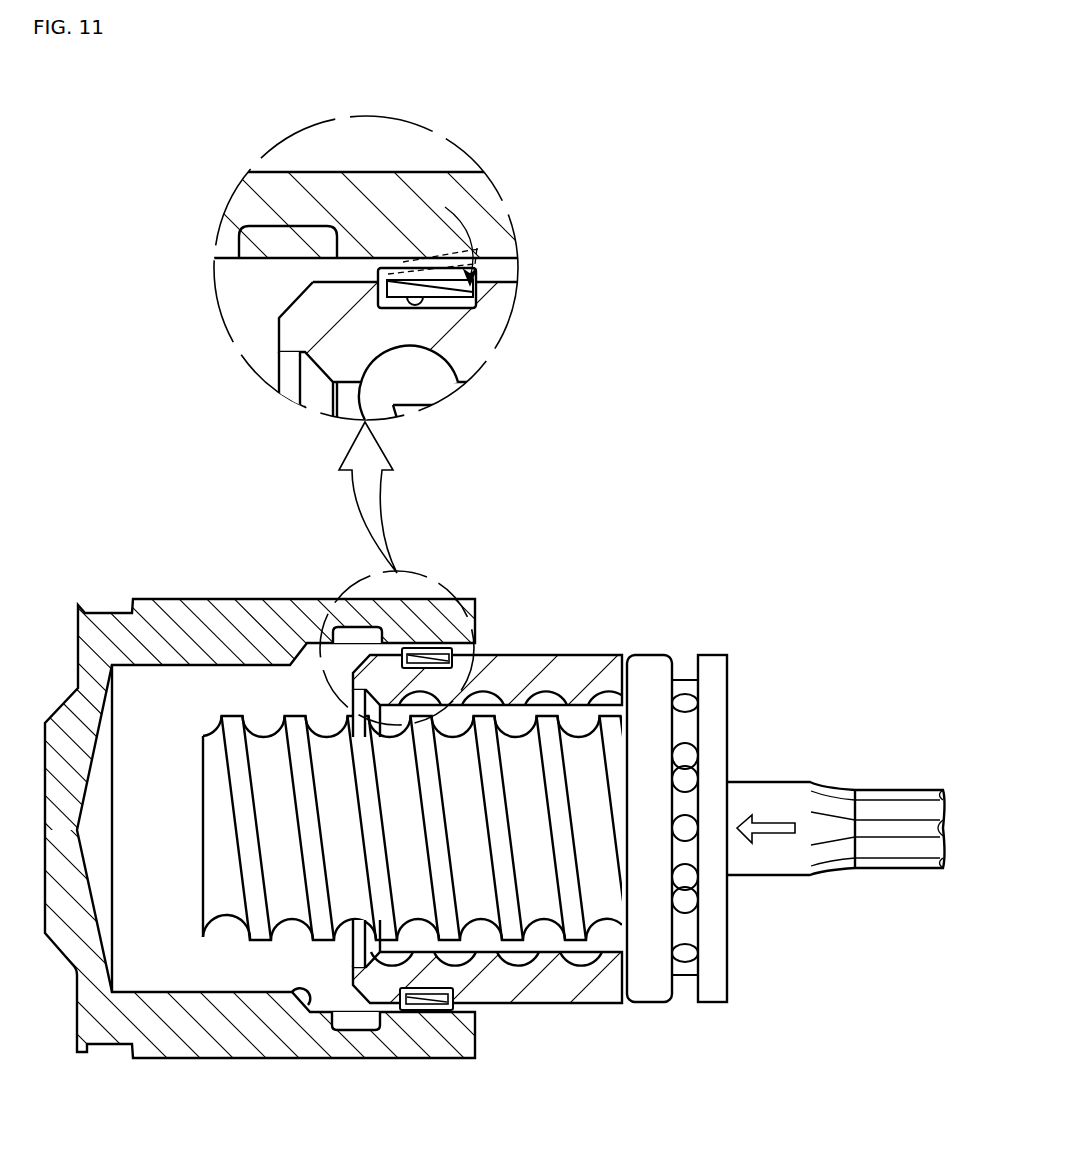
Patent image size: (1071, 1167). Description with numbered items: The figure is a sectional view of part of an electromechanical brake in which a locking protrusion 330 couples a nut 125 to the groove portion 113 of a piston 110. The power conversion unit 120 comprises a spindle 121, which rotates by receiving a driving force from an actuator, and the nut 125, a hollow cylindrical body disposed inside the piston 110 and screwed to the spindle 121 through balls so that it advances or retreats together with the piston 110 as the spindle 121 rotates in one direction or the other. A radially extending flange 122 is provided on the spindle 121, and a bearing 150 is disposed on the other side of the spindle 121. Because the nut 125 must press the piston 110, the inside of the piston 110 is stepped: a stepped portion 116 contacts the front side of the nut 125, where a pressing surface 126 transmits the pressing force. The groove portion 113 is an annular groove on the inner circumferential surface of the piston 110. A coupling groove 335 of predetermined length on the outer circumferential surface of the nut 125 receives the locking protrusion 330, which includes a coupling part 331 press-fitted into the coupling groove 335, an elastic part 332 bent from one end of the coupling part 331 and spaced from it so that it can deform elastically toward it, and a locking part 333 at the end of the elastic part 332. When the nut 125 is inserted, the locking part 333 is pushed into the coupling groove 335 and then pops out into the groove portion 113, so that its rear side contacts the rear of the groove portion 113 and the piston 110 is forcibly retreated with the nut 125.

The piston 110 is at (158, 1054).
The groove portion 113 is at (358, 1023).
The stepped portion 116 is at (306, 1012).
The power conversion unit 120 is at (542, 1087).
The spindle 121 is at (530, 894).
The flange 122 is at (645, 998).
The nut 125 is at (602, 995).
The pressing surface 126 is at (300, 287).
The bearing 150 is at (712, 998).
The locking protrusion 330 is at (447, 635).
The coupling part 331 is at (463, 303).
The elastic part 332 is at (392, 272).
The locking part 333 is at (480, 252).
The coupling groove 335 is at (420, 300).